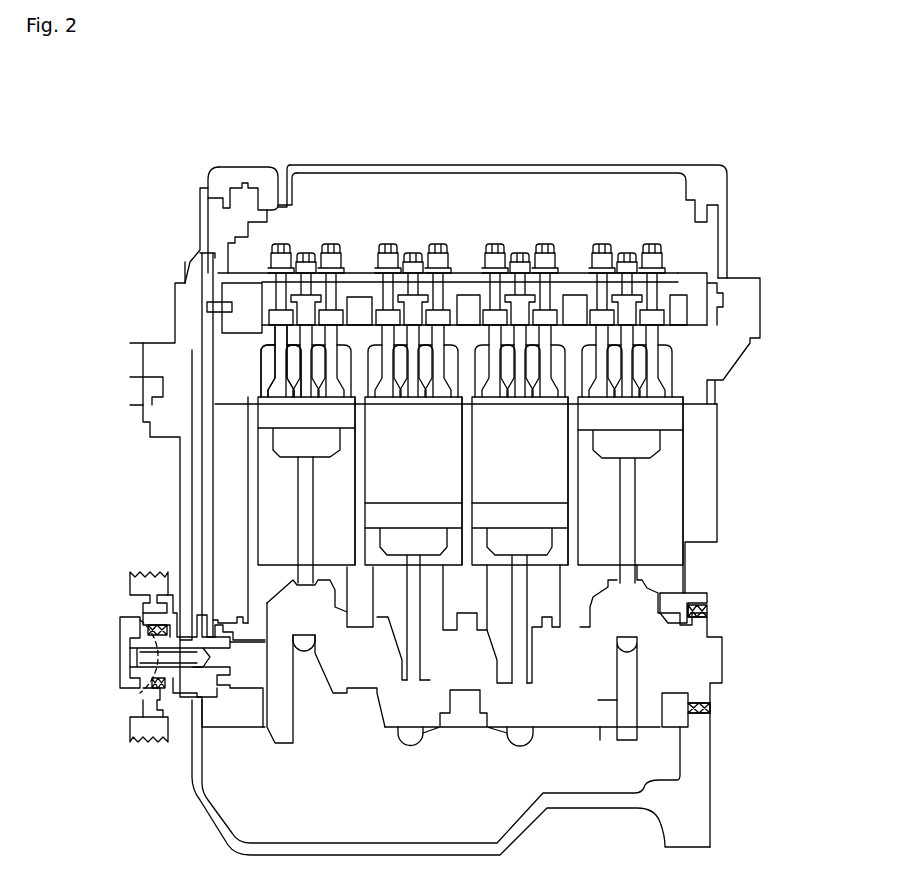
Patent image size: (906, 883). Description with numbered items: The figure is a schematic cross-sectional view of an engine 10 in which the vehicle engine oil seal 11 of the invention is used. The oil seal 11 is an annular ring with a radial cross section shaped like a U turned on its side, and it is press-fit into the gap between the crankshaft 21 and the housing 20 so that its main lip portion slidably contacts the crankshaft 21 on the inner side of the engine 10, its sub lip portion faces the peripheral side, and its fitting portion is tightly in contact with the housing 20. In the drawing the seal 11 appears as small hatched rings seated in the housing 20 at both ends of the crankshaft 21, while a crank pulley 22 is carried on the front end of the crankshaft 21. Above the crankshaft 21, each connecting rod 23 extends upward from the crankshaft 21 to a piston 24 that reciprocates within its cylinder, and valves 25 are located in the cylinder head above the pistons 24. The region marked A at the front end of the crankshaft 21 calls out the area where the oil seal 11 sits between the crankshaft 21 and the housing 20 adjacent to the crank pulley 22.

The engine 10 is at (574, 128).
The vehicle engine oil seal 11 is at (707, 612).
The housing 20 is at (710, 600).
The crankshaft 21 is at (121, 657).
The crank pulley 22 is at (123, 734).
The connecting rod 23 is at (303, 512).
The piston 24 is at (267, 444).
The valve 25 is at (266, 382).
The seal region A is at (130, 693).